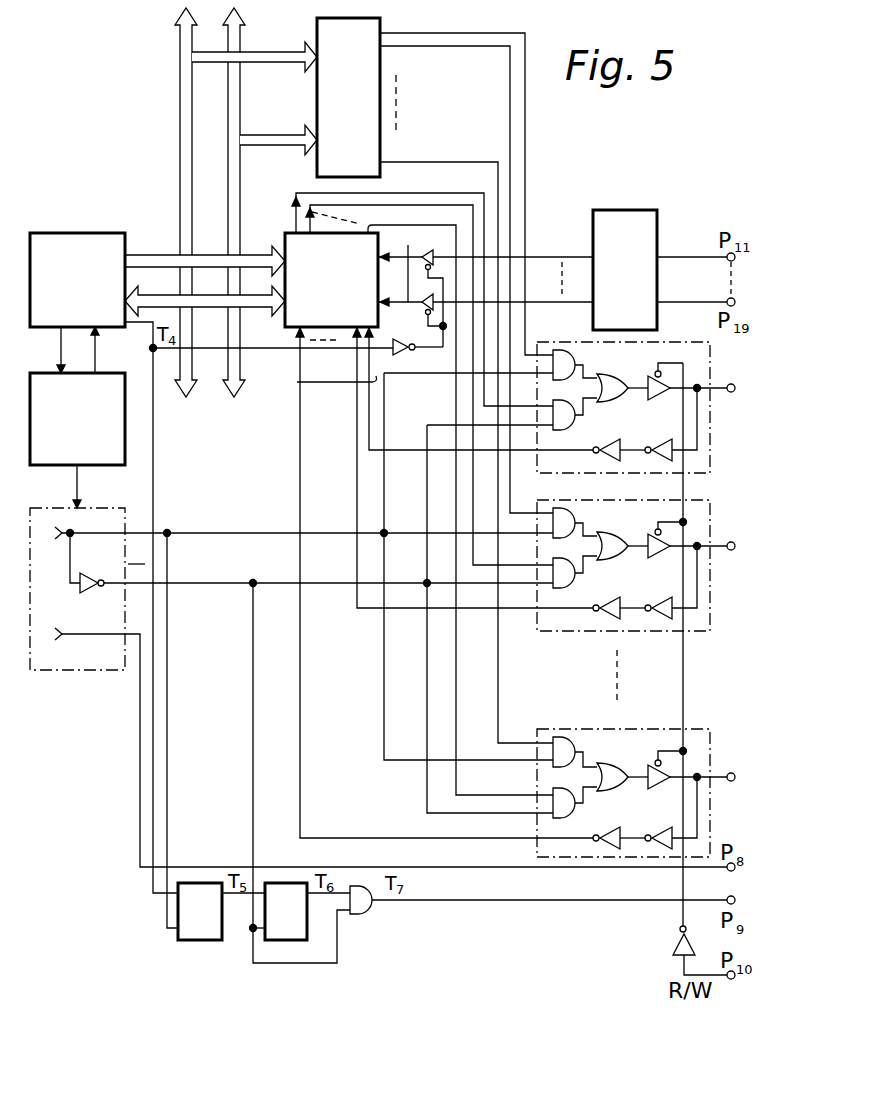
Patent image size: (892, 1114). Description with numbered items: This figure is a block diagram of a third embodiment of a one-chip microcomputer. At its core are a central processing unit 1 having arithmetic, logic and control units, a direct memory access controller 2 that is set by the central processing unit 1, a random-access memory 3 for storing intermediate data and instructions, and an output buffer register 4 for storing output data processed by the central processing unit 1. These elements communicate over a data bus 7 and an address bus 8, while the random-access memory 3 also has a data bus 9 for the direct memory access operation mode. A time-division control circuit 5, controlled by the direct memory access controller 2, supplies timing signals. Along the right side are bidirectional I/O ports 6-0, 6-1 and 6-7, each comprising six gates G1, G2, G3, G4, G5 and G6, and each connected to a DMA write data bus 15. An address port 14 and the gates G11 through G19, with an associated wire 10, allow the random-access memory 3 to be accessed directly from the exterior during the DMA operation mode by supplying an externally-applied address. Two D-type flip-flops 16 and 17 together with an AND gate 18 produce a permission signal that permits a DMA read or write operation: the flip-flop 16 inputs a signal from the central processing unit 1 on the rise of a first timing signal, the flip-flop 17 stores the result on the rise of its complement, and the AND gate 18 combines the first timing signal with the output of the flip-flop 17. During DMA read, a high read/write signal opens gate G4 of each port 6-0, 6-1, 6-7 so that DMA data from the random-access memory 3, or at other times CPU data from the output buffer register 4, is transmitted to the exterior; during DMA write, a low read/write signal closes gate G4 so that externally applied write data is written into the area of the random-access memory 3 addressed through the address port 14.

The central processing unit 1 is at (93, 233).
The direct memory access controller 2 is at (103, 373).
The random-access memory 3 is at (282, 233).
The output buffer register 4 is at (380, 18).
The time-division control circuit 5 is at (102, 508).
The I/O port 6-0 is at (686, 342).
The I/O port 6-1 is at (708, 500).
The I/O port 6-7 is at (692, 725).
The data bus 7 is at (180, 38).
The address bus 8 is at (242, 36).
The data bus 9 is at (414, 229).
The data line 10 is at (408, 252).
The address port 14 is at (630, 210).
The DMA write data bus 15 is at (298, 384).
The D-type flip-flop 16 is at (200, 941).
The D-type flip-flop 17 is at (296, 941).
The AND gate 18 is at (368, 916).
The gate G1 is at (556, 737).
The gate G2 is at (567, 429).
The gate G3 is at (602, 763).
The gate G4 is at (654, 761).
The gate G5 is at (656, 826).
The gate G6 is at (612, 462).
The gate G11 is at (436, 260).
The gate G19 is at (428, 311).